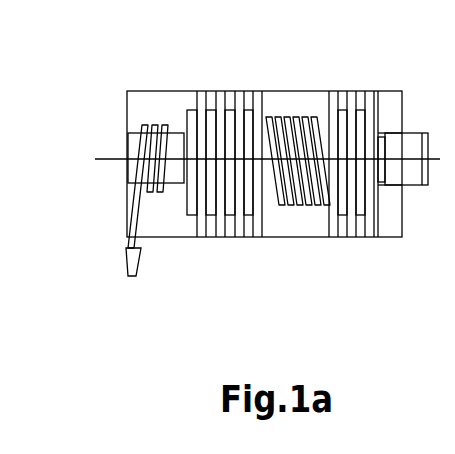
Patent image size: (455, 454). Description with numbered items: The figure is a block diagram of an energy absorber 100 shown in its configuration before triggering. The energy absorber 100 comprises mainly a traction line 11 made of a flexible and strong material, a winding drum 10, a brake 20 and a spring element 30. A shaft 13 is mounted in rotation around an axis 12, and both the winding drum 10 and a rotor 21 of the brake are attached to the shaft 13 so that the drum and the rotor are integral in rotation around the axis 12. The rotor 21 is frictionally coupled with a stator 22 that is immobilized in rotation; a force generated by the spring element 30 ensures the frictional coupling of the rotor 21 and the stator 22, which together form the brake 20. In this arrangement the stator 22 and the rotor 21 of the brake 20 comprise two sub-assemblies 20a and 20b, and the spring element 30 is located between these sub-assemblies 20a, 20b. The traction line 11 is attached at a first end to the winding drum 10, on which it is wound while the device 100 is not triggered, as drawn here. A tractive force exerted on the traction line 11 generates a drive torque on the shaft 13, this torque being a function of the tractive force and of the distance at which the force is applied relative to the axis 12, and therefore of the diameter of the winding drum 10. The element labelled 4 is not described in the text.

The energy absorber 100 is at (107, 278).
The output shaft 4 is at (413, 122).
The winding drum 10 is at (131, 136).
The traction line 11 is at (138, 223).
The axis 12 is at (107, 160).
The shaft 13 is at (183, 140).
The brake 20 is at (215, 81).
The sub-assembly 20a is at (269, 270).
The sub-assembly 20b is at (383, 270).
The rotor 21 is at (348, 136).
The stator 22 is at (258, 217).
The spring element 30 is at (290, 112).